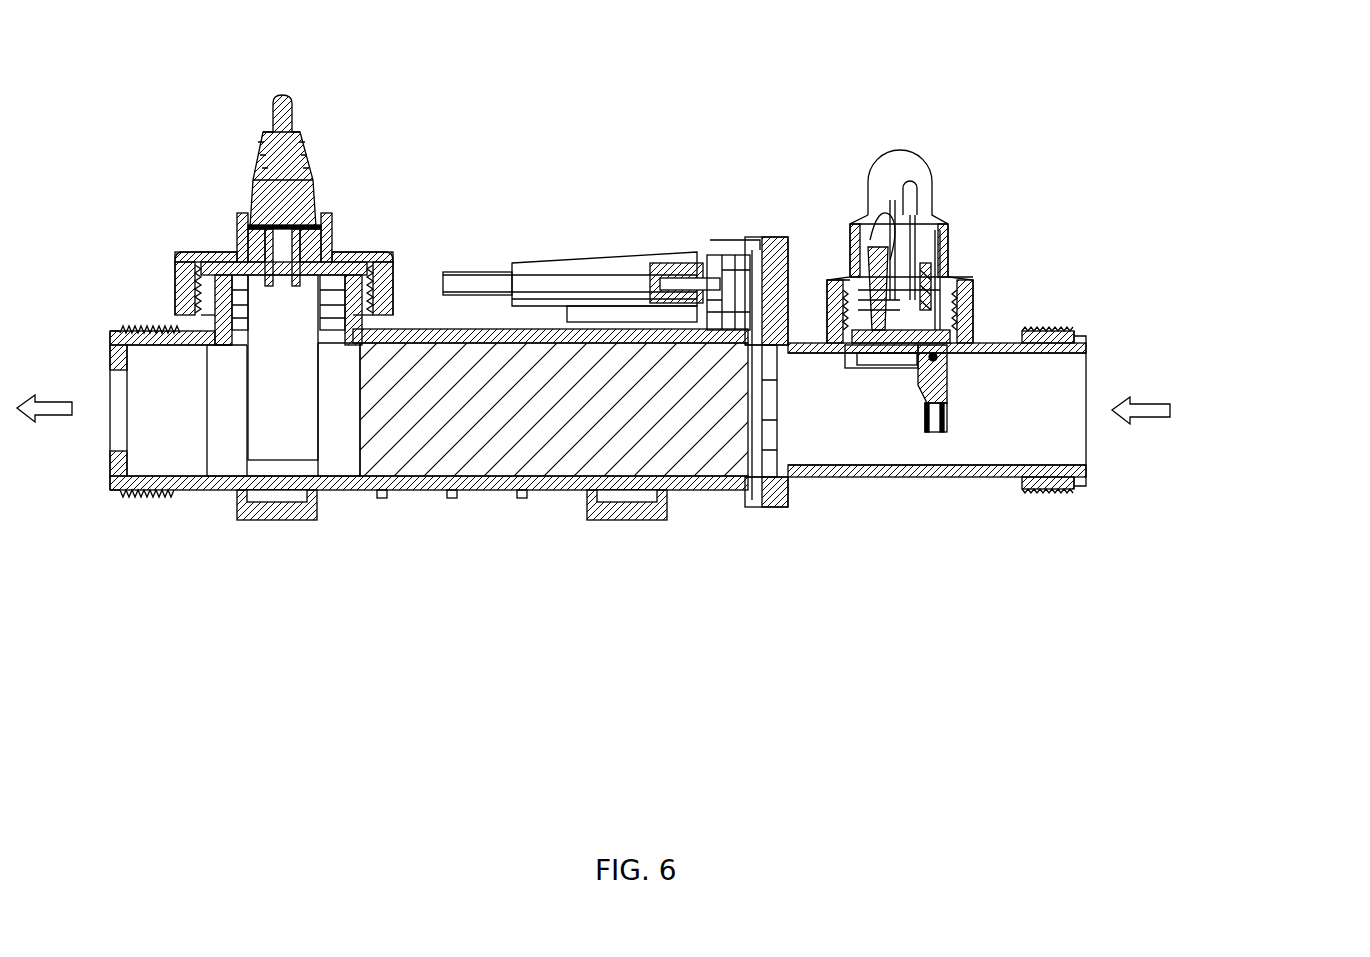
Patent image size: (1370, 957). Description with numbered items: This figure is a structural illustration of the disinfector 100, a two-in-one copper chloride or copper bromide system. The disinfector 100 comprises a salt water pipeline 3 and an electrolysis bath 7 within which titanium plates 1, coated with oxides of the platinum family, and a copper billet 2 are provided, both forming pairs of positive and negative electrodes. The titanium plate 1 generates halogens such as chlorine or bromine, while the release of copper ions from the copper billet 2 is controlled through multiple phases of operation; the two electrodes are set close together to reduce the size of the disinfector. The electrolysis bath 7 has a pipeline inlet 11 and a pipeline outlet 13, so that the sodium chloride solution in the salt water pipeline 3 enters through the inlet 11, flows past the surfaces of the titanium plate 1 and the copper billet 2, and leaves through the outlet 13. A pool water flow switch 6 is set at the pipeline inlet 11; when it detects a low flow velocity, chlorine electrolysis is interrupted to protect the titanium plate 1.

The titanium plate 1 is at (623, 483).
The copper billet 2 is at (272, 415).
The salt water pipeline 3 is at (993, 343).
The pool water flow switch 6 is at (937, 430).
The electrolysis bath 7 is at (828, 450).
The pipeline inlet 11 is at (1095, 331).
The pipeline outlet 13 is at (93, 497).
The disinfector 100 is at (1011, 93).